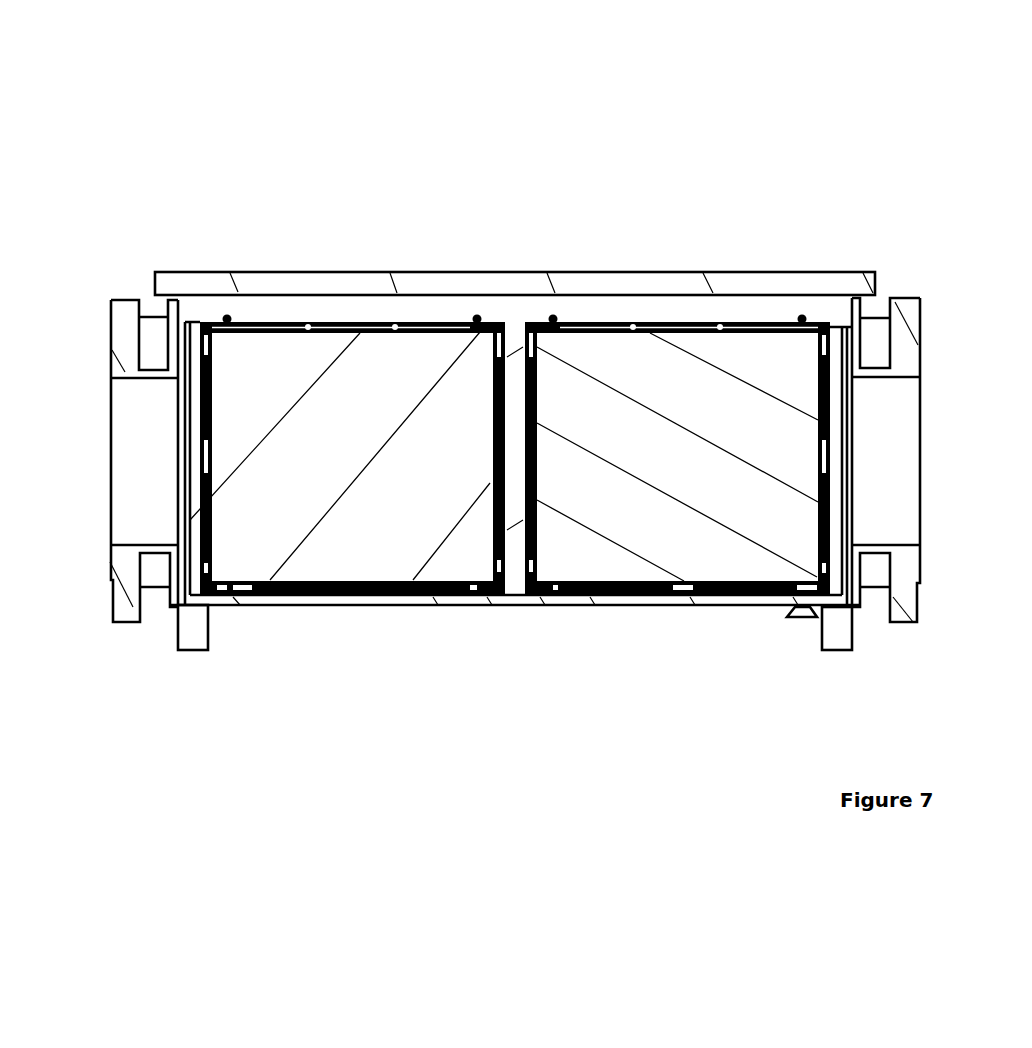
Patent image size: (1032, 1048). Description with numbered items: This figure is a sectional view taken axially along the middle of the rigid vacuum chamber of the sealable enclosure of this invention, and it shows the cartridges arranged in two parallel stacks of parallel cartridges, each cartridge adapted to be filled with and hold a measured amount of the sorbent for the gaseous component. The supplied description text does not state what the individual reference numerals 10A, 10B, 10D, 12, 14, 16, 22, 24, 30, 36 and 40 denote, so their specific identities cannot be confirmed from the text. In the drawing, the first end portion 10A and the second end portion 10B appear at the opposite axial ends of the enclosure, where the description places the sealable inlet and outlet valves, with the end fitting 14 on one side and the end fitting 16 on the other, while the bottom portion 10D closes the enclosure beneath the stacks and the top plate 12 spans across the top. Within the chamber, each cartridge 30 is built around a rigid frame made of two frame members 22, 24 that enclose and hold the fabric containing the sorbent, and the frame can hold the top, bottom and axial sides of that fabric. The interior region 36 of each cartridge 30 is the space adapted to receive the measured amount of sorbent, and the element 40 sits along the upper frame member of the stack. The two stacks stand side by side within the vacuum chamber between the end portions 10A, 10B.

The first end portion of enclosure 10A is at (155, 313).
The second end portion of enclosure 10B is at (845, 303).
The bottom portion of enclosure 10D is at (448, 607).
The top cover plate 12 is at (578, 272).
The first end fitting 14 is at (96, 427).
The second end fitting 16 is at (878, 441).
The frame member 22 is at (269, 318).
The frame member 24 is at (648, 322).
The battery module 30 is at (492, 431).
The battery cells 36 is at (348, 548).
The connector 40 is at (297, 320).